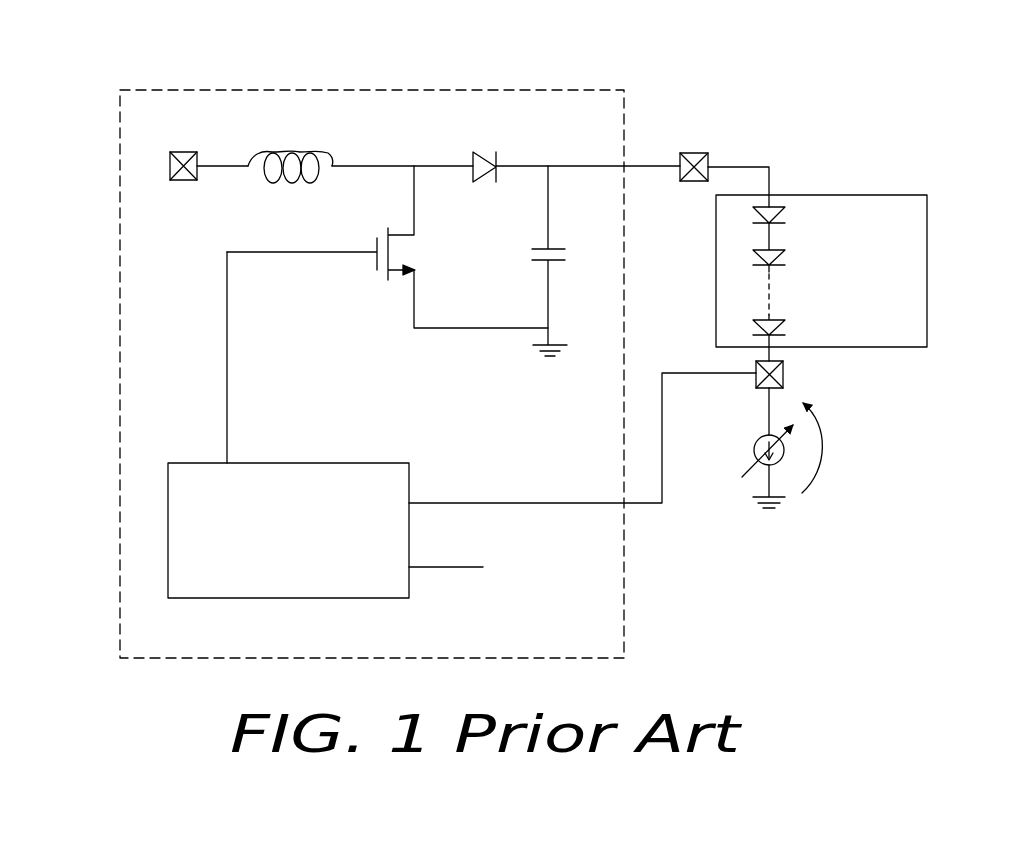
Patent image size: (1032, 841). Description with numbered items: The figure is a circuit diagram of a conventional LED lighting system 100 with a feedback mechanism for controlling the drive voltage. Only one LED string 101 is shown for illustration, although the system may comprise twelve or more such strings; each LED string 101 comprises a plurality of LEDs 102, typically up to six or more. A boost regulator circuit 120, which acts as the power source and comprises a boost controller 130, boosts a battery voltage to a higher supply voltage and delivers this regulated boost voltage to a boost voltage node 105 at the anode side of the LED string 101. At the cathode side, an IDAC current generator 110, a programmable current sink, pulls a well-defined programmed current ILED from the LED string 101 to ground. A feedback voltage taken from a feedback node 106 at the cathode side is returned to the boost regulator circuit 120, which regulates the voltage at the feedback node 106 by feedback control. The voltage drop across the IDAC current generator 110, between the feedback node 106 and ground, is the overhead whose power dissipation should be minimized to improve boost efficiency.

The LED lighting system 100 is at (203, 40).
The boost regulator circuit 120 is at (503, 90).
The boost controller 130 is at (323, 598).
The boost voltage node 105 is at (697, 182).
The LED string 101 is at (927, 233).
The LED 102 is at (772, 205).
The feedback node 106 is at (783, 372).
The IDAC current generator 110 is at (754, 447).